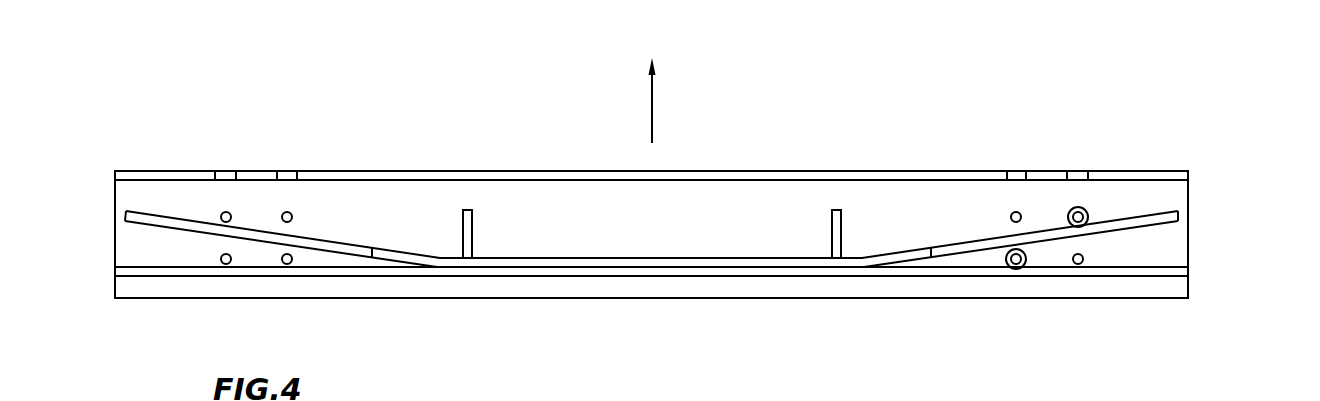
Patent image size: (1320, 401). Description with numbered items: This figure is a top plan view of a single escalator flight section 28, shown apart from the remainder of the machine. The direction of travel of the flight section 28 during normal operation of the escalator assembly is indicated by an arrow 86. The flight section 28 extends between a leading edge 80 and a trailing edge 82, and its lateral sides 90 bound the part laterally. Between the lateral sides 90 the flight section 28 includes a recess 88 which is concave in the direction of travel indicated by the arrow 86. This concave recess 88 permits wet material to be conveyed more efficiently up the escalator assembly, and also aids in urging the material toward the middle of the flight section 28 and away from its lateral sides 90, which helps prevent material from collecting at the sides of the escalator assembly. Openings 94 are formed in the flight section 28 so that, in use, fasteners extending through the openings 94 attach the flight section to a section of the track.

The escalator flight section 28 is at (1157, 104).
The leading edge 80 is at (560, 172).
The trailing edge 82 is at (685, 299).
The arrow 86 is at (654, 97).
The recess 88 is at (695, 257).
The lateral sides 90 is at (115, 230).
The openings 94 is at (292, 215).